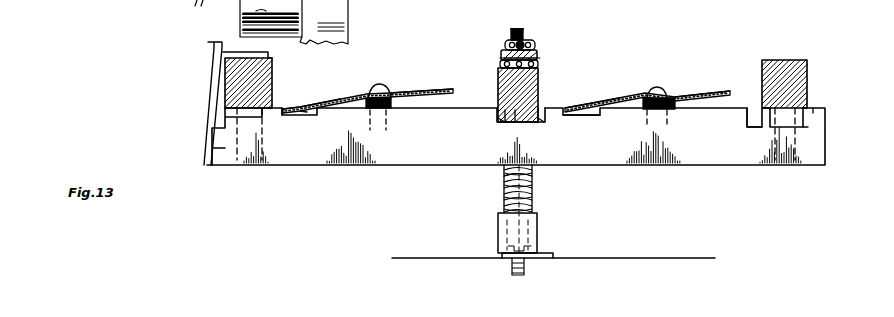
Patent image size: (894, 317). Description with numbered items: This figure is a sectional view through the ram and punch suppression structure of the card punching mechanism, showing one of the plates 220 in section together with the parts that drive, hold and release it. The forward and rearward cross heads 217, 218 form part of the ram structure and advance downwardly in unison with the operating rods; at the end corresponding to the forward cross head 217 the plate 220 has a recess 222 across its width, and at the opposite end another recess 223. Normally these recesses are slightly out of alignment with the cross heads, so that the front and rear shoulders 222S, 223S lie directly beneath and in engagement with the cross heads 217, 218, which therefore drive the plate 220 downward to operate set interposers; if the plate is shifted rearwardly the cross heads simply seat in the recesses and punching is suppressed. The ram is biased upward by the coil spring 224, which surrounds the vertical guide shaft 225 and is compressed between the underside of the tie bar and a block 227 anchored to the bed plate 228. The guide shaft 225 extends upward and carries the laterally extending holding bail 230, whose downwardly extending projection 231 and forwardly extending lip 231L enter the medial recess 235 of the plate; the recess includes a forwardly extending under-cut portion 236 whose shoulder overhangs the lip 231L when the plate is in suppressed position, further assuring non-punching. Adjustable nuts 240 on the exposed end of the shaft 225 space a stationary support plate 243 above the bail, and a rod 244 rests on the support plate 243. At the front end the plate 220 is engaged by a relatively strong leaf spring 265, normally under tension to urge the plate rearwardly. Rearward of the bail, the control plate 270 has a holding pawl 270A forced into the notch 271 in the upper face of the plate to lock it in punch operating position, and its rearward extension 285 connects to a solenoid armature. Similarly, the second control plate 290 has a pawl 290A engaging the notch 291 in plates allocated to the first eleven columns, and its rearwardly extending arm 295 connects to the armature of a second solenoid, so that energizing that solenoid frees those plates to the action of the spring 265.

The forward cross head 217 is at (225, 78).
The rearward cross head 218 is at (807, 76).
The plate 220 is at (432, 144).
The recess 222 is at (228, 117).
The front shoulder 222S is at (283, 108).
The recess 223 is at (758, 123).
The rear shoulder 223S is at (825, 111).
The coil spring 224 is at (531, 189).
The vertical guide shaft 225 is at (524, 31).
The block 227 is at (499, 229).
The bed plate 228 is at (606, 258).
The holding bail 230 is at (538, 82).
The projection 231 is at (538, 124).
The lip 231L is at (505, 125).
The recess 235 is at (539, 108).
The under-cut portion 236 is at (505, 114).
The adjustable nut 240 is at (539, 47).
The support plate 243 is at (502, 54).
The rod 244 is at (513, 39).
The leaf spring 265 is at (215, 107).
The control plate 270 is at (683, 90).
The holding pawl 270A is at (600, 98).
The notch 271 is at (587, 113).
The rearward extension 285 is at (710, 93).
The second control plate 290 is at (407, 85).
The pawl 290A is at (300, 110).
The notch 291 is at (307, 114).
The rearwardly extending arm 295 is at (439, 93).